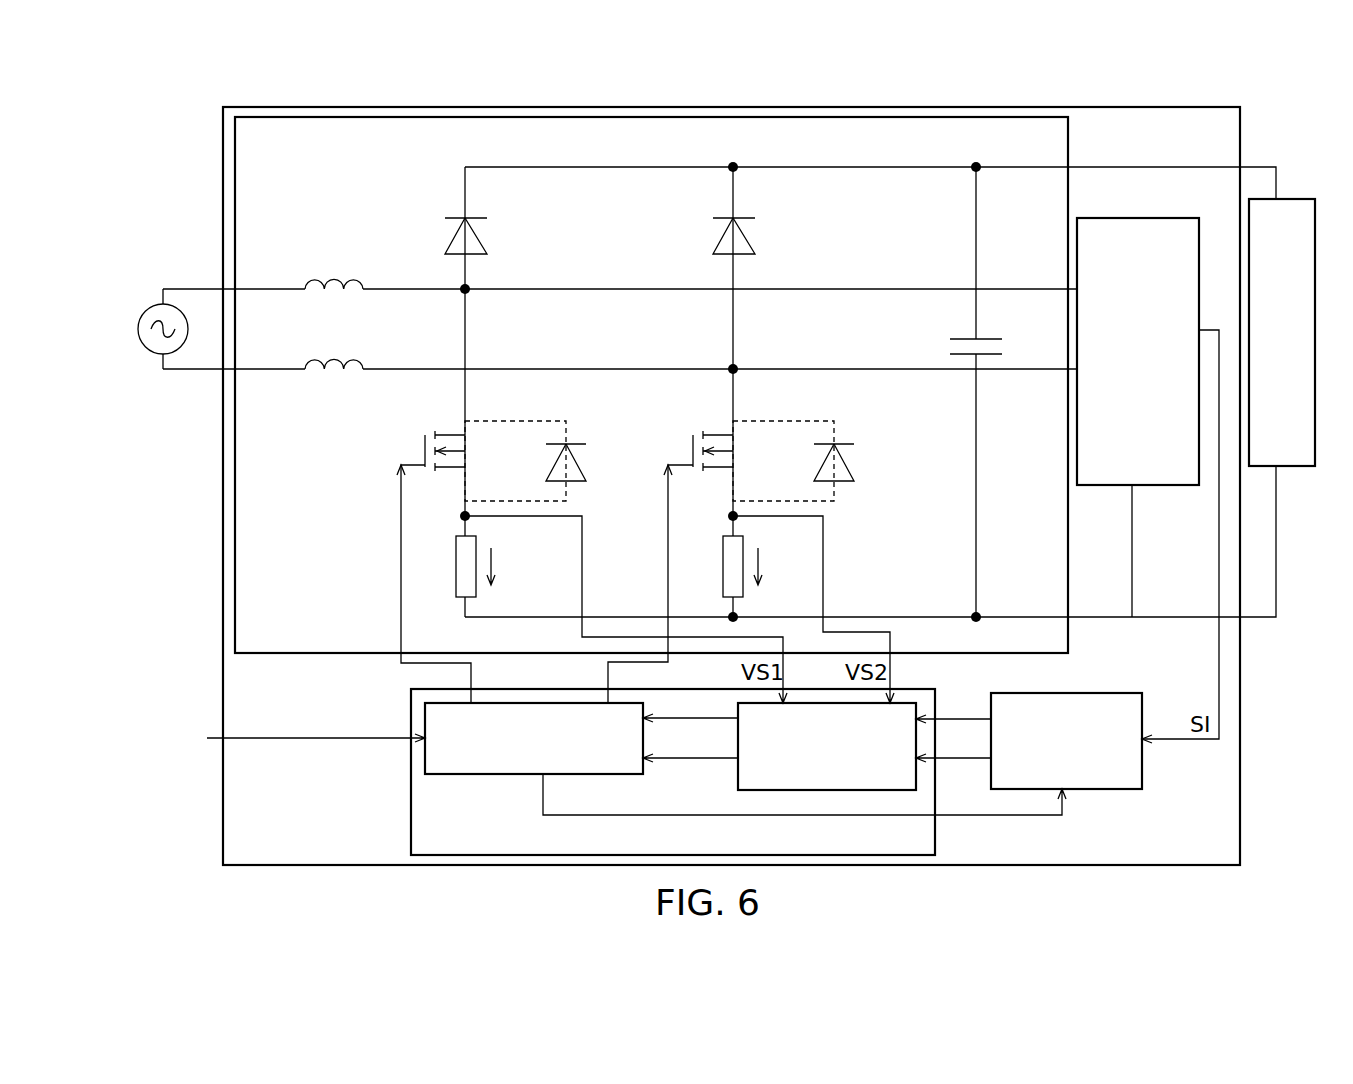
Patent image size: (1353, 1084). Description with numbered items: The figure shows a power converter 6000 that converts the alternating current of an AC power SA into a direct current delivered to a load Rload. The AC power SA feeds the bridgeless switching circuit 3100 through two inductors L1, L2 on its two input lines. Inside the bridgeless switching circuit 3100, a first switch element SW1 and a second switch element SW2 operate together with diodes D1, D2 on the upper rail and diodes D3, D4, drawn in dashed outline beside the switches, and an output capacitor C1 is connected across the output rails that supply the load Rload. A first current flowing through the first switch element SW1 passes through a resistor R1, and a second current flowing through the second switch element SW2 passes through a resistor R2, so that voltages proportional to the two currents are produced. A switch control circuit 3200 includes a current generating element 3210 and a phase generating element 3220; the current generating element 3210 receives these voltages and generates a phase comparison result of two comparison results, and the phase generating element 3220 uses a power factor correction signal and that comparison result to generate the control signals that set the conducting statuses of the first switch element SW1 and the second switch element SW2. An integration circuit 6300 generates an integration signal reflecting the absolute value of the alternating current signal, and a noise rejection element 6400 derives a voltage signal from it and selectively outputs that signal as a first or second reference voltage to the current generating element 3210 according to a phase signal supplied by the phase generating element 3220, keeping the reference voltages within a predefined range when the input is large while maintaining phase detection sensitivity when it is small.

The power converter 6000 is at (223, 243).
The bridgeless switching circuit 3100 is at (235, 193).
The integration circuit 6300 is at (1125, 218).
The noise rejection element 6400 is at (1082, 693).
The switch control circuit 3200 is at (411, 812).
The current generating element 3210 is at (912, 703).
The phase generating element 3220 is at (425, 722).
The AC power SA is at (143, 312).
The inductor L1 is at (362, 284).
The inductor L2 is at (362, 364).
The diode D1 is at (480, 240).
The diode D2 is at (748, 240).
The diode D3 is at (580, 465).
The diode D4 is at (848, 465).
The first switch element SW1 is at (446, 567).
The second switch element SW2 is at (697, 567).
The resistor R1 is at (472, 576).
The resistor R2 is at (738, 576).
The capacitor C1 is at (1002, 347).
The load Rload is at (1282, 332).